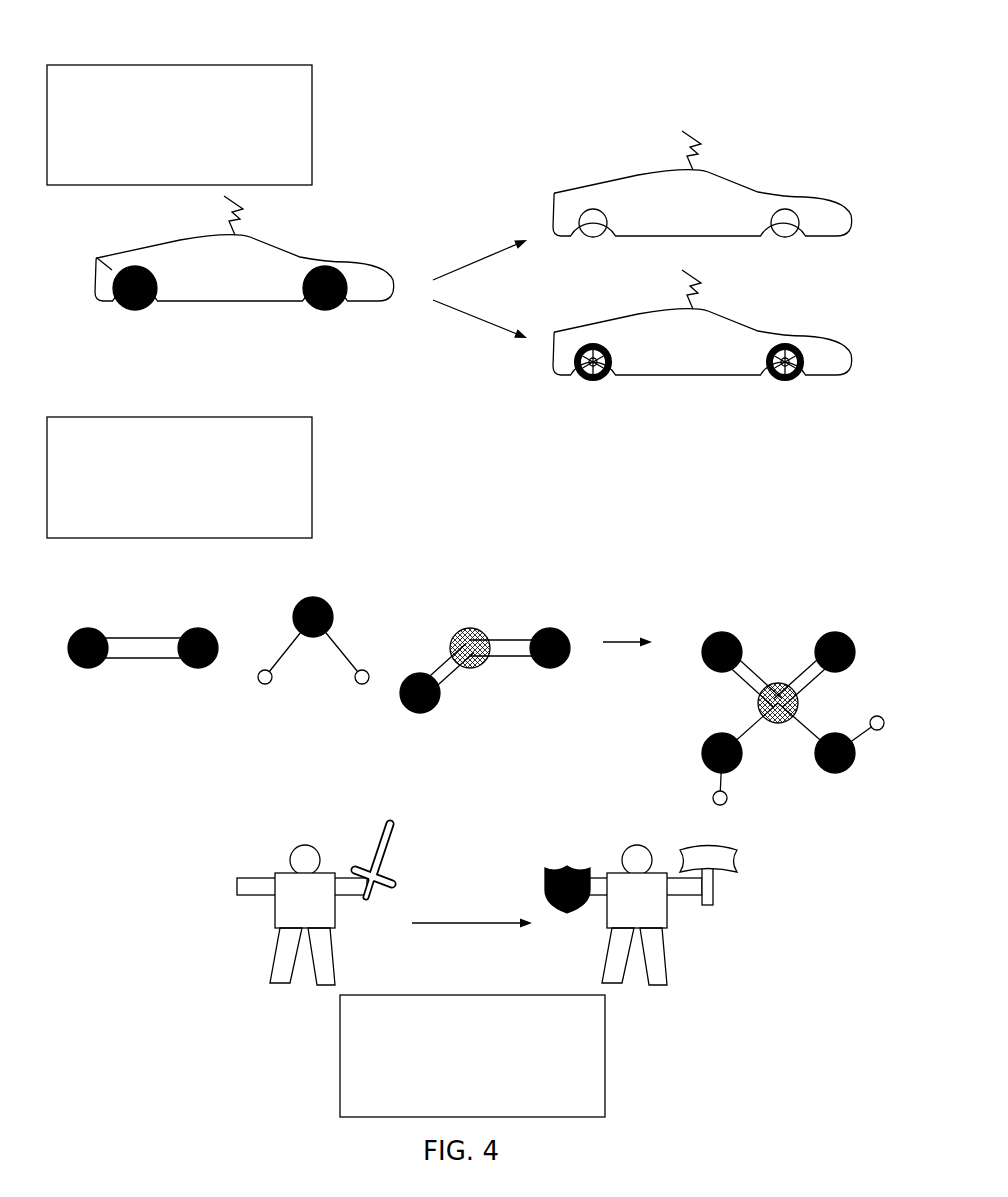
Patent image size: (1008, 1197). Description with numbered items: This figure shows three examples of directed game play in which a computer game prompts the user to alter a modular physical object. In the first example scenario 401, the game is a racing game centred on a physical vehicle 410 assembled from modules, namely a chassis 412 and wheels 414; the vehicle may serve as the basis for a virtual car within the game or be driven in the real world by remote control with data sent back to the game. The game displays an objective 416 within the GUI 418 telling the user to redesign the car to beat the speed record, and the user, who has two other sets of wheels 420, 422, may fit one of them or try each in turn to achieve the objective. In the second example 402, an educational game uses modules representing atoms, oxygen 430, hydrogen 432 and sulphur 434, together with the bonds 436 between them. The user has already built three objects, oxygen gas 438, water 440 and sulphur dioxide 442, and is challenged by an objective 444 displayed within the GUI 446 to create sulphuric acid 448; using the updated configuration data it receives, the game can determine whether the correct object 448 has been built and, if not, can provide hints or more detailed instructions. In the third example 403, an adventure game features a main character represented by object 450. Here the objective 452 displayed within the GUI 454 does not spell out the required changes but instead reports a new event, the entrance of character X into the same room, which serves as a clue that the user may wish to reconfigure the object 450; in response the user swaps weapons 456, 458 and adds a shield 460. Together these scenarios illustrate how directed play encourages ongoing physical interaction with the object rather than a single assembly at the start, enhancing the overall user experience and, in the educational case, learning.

The first example scenario 401 is at (520, 65).
The second example scenario 402 is at (545, 486).
The third example scenario 403 is at (372, 815).
The physical vehicle 410 is at (318, 235).
The chassis 412 is at (112, 270).
The wheels 414 is at (118, 305).
The objective 416 is at (315, 112).
The GUI 418 is at (166, 66).
The set of wheels 420 is at (785, 226).
The set of wheels 422 is at (796, 378).
The oxygen module 430 is at (90, 668).
The hydrogen module 432 is at (267, 684).
The sulphur module 434 is at (452, 641).
The bonds 436 is at (512, 675).
The oxygen gas 438 is at (143, 644).
The water 440 is at (306, 647).
The sulphur dioxide 442 is at (485, 647).
The objective 444 is at (198, 457).
The GUI 446 is at (313, 474).
The sulphuric acid 448 is at (785, 790).
The main character object 450 is at (272, 990).
The objective 452 is at (506, 1082).
The GUI 454 is at (606, 1056).
The weapon 456 is at (396, 840).
The weapon 458 is at (738, 868).
The shield 460 is at (545, 876).